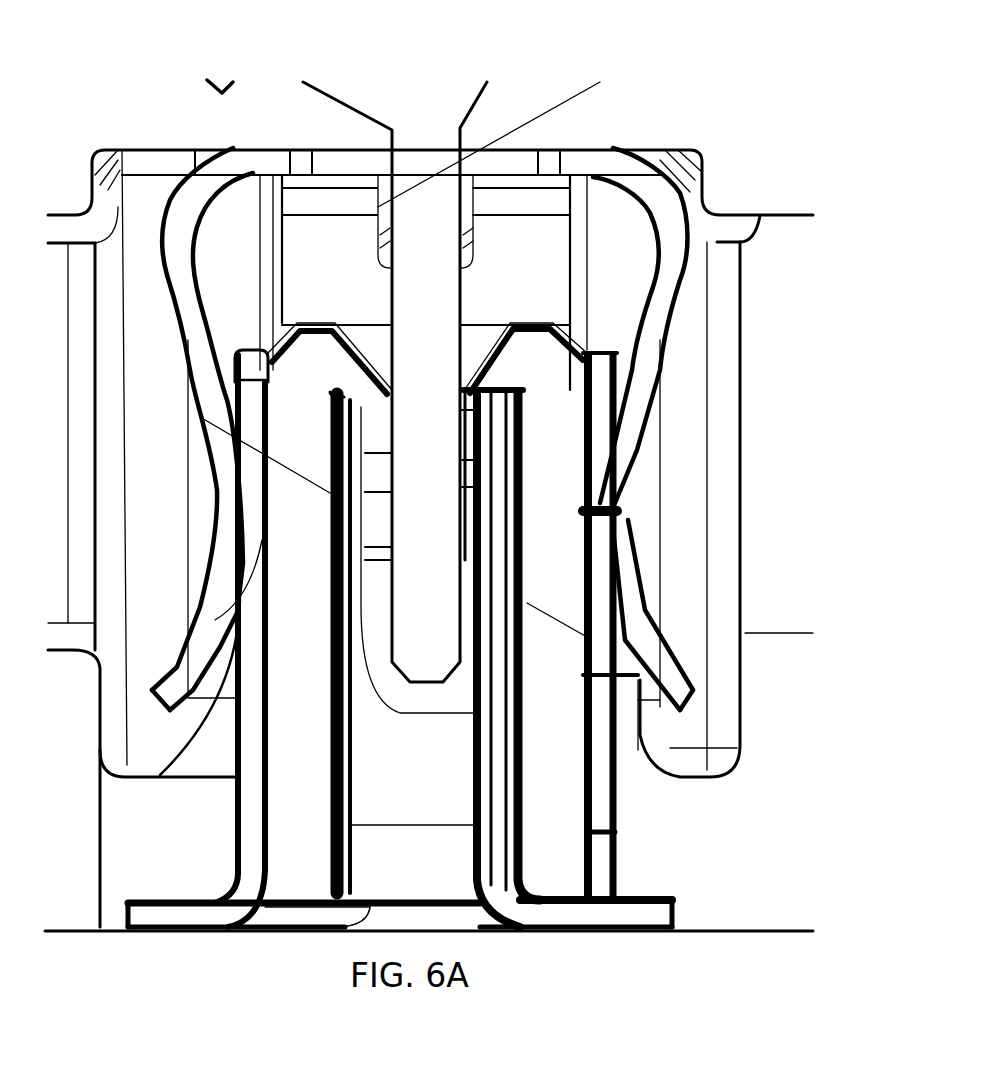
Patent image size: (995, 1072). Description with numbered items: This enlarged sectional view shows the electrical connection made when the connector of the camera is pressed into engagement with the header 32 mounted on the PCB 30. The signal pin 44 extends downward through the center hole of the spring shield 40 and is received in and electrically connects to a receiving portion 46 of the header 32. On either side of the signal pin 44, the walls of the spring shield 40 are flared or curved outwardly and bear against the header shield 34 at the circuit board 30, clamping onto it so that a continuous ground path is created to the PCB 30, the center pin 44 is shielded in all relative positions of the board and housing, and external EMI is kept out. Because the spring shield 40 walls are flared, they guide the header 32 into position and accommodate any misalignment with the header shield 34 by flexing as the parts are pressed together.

The PCB 30 is at (680, 938).
The header 32 is at (553, 783).
The header shield 34 is at (250, 813).
The spring shield 40 is at (647, 387).
The signal pin 44 is at (427, 145).
The receiving portion 46 is at (283, 915).